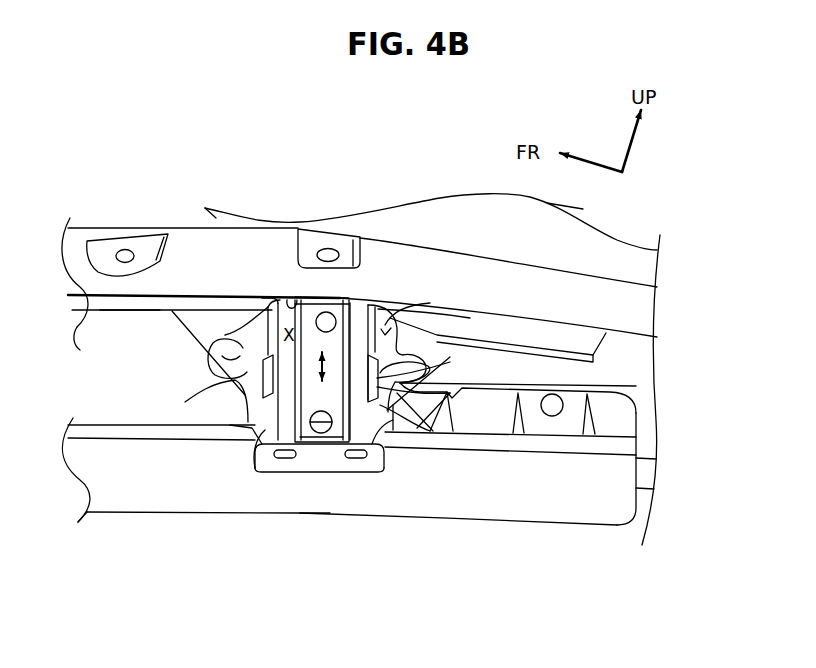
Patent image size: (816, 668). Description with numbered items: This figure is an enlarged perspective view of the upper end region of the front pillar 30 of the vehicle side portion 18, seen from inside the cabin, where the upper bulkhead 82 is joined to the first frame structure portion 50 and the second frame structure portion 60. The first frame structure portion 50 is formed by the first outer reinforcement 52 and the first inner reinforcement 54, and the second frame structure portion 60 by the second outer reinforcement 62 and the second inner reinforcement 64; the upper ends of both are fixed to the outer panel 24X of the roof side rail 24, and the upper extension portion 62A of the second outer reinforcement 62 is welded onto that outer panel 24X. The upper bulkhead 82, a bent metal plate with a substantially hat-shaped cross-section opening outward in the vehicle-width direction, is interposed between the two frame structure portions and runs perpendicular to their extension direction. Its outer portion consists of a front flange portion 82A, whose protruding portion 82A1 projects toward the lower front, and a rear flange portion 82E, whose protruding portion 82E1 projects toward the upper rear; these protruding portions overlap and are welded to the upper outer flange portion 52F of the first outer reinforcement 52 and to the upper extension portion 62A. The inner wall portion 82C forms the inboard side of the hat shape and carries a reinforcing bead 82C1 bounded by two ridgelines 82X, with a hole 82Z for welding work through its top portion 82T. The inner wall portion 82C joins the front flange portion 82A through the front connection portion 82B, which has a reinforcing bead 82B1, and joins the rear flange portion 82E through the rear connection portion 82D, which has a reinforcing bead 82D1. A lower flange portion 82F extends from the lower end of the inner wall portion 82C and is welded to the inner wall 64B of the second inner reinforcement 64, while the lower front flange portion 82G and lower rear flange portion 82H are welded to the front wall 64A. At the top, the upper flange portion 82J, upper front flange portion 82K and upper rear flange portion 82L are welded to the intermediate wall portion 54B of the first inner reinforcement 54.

The vehicle side portion 18 is at (166, 165).
The roof side rail 24 is at (617, 238).
The outer panel 24X is at (420, 213).
The front pillar 30 is at (147, 557).
The first frame structure portion 50 is at (124, 218).
The first outer reinforcement 52 is at (243, 222).
The upper outer flange portion 52F is at (213, 327).
The first inner reinforcement 54 is at (101, 302).
The intermediate wall portion 54B is at (129, 303).
The second frame structure portion 60 is at (110, 527).
The second outer reinforcement 62 is at (628, 510).
The upper extension portion 62A is at (644, 413).
The second inner reinforcement 64 is at (188, 512).
The front wall 64A is at (108, 430).
The inner wall 64B is at (236, 512).
The upper bulkhead 82 is at (238, 383).
The front flange portion 82A is at (243, 348).
The protruding portion 82A1 is at (250, 340).
The front connection portion 82B is at (266, 407).
The reinforcing bead 82B1 is at (232, 390).
The inner wall portion 82C is at (285, 443).
The reinforcing bead 82C1 is at (340, 423).
The rear connection portion 82D is at (378, 416).
The reinforcing bead 82D1 is at (432, 366).
The rear flange portion 82E is at (385, 338).
The protruding portion 82E1 is at (437, 335).
The lower flange portion 82F is at (297, 463).
The lower front flange portion 82G is at (258, 425).
The lower rear flange portion 82H is at (384, 418).
The upper flange portion 82J is at (288, 311).
The upper front flange portion 82K is at (240, 350).
The upper rear flange portion 82L is at (390, 347).
The top portion 82T is at (340, 298).
The ridgelines 82X is at (300, 427).
The hole 82Z is at (330, 307).